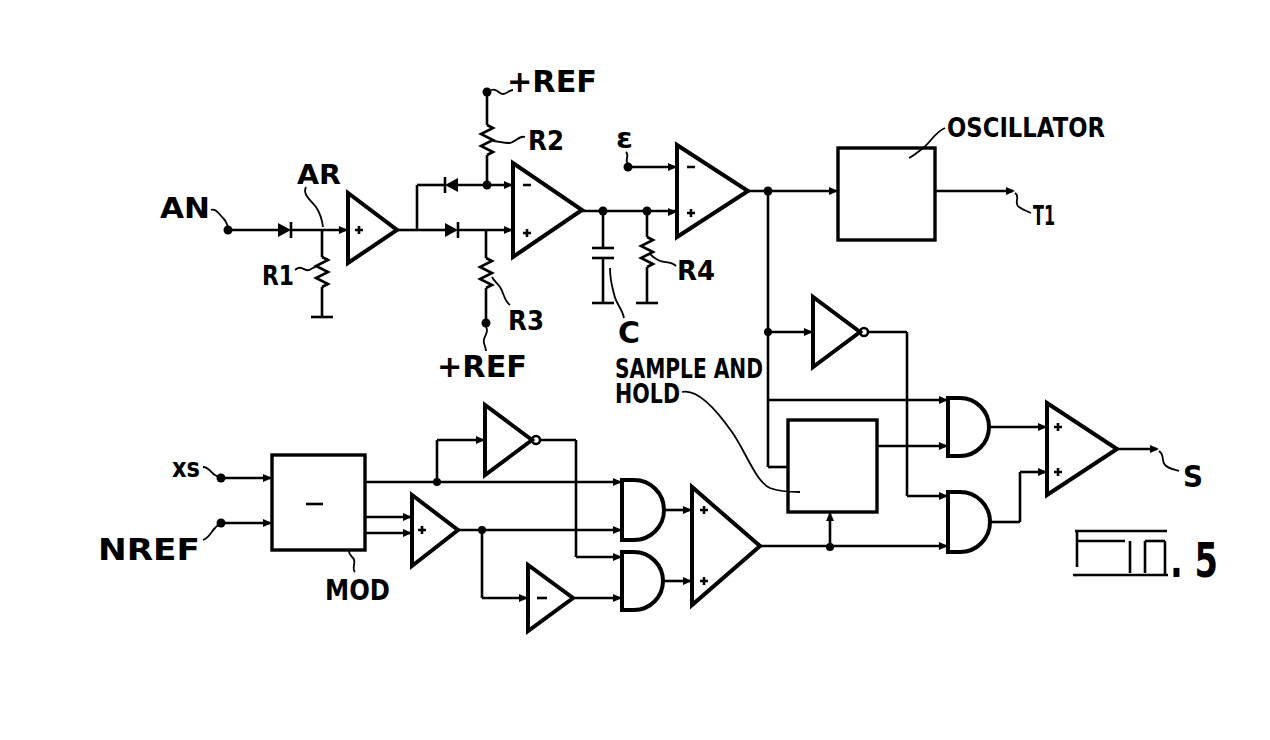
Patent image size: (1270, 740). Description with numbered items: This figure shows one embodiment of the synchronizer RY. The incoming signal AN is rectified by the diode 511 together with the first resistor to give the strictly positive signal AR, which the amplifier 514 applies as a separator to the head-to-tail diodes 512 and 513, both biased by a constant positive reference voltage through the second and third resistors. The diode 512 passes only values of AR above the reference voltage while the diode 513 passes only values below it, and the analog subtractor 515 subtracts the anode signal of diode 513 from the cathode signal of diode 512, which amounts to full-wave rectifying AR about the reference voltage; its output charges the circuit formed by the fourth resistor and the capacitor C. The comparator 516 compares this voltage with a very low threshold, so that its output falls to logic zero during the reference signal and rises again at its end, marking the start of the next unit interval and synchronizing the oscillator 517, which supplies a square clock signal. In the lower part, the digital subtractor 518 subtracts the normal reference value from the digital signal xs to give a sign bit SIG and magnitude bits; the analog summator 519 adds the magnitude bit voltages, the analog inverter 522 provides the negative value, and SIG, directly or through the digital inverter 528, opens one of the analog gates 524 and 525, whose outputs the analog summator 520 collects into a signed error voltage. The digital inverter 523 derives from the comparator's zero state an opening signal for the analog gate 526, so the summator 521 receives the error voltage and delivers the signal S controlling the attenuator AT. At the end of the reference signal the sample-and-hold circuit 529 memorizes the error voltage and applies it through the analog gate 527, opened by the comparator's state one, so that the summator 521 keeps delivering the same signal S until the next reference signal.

The diode 511 is at (282, 222).
The diode 512 is at (452, 236).
The diode 513 is at (444, 181).
The amplifier 514 is at (366, 255).
The analog subtractor 515 is at (545, 235).
The comparator 516 is at (724, 180).
The oscillator 517 is at (886, 148).
The digital subtractor 518 is at (323, 455).
The analog summator 519 is at (431, 564).
The analog summator 520 is at (743, 568).
The analog summator 521 is at (1082, 428).
The analog inverter 522 is at (560, 622).
The digital inverter 523 is at (854, 324).
The analog gate 524 is at (640, 612).
The analog gate 525 is at (652, 482).
The analog gate 526 is at (973, 551).
The analog gate 527 is at (978, 402).
The digital inverter 528 is at (522, 432).
The sample-and-hold circuit 529 is at (870, 514).